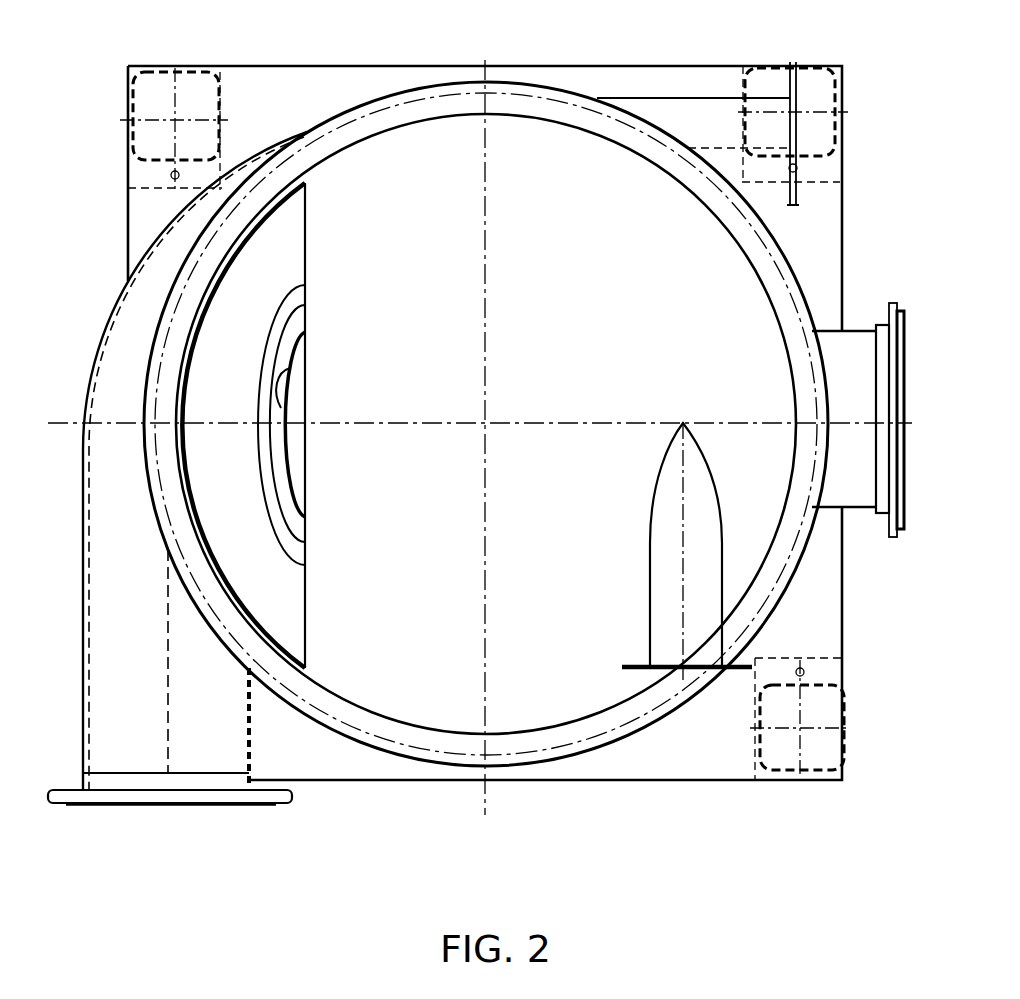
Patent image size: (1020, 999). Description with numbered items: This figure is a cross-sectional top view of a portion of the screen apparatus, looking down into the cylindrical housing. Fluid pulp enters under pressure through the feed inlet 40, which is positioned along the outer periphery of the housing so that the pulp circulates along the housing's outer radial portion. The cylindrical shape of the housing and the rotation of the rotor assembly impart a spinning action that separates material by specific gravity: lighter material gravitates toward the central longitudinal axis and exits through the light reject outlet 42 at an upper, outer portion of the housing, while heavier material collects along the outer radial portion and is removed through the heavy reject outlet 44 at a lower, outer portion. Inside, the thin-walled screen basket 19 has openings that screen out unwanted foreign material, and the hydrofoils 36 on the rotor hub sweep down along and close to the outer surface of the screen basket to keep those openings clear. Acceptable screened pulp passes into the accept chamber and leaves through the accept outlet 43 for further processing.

The screen basket 19 is at (297, 488).
The hydrofoils 36 is at (292, 385).
The feed inlet 40 is at (128, 806).
The light reject outlet 42 is at (655, 569).
The accept outlet 43 is at (886, 330).
The heavy reject outlet 44 is at (782, 122).